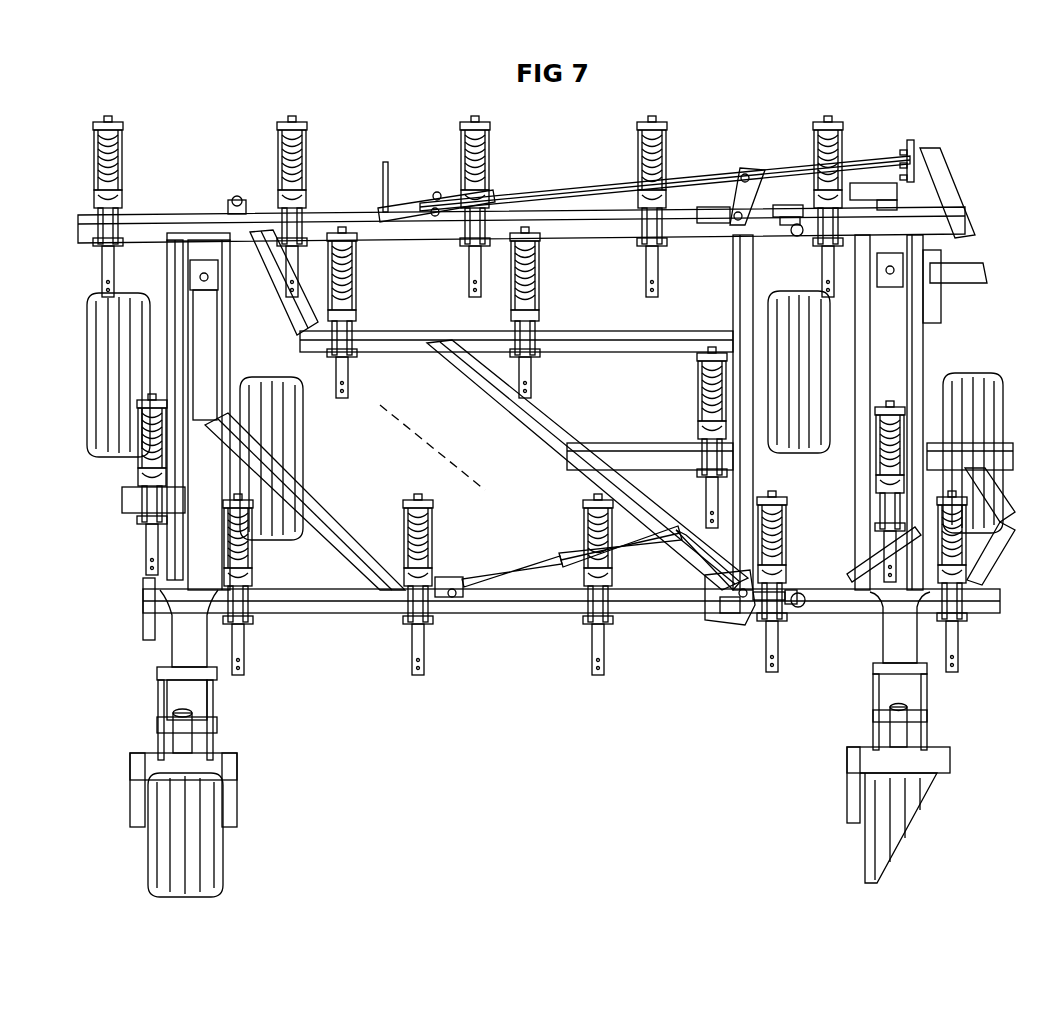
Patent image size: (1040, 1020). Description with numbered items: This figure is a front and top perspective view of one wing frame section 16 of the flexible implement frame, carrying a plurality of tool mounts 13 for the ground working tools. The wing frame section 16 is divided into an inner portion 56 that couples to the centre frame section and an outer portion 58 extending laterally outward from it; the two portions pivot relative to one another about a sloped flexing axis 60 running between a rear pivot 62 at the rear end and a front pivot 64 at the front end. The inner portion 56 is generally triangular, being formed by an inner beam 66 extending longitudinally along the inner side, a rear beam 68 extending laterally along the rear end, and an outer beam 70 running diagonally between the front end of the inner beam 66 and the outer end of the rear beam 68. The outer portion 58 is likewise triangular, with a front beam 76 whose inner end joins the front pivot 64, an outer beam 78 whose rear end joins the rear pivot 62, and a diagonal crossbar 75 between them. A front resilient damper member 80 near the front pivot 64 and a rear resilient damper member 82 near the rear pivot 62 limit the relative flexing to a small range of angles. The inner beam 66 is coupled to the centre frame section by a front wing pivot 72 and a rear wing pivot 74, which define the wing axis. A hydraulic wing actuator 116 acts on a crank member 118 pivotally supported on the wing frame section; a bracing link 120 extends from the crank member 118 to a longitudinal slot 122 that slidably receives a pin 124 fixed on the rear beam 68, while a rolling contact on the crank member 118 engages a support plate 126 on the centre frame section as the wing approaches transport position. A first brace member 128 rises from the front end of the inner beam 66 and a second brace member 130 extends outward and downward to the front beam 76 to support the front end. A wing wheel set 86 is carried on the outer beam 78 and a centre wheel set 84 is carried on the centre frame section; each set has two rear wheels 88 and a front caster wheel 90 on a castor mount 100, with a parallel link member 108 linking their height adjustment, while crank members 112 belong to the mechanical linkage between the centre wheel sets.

The wing frame section 16 is at (231, 64).
The rear resilient damper member 82 is at (222, 208).
The longitudinal slot 122 is at (453, 200).
The pin 124 is at (437, 190).
The bracing link 120 is at (560, 188).
The crank member 118 is at (727, 165).
The rear wing pivot 74 is at (797, 210).
The support plate 126 is at (873, 183).
The hydraulic wing actuator 116 is at (920, 153).
The rear beam 68 is at (583, 232).
The rear pivot 62 is at (240, 252).
The inner beam 66 is at (740, 288).
The parallel link member 108 is at (222, 360).
The rear wheels 88 is at (100, 390).
The flexing axis 60 is at (400, 420).
The inner portion 56 is at (510, 430).
The outer portion 58 is at (352, 490).
The outer beam 70 is at (543, 433).
The crossbar 75 is at (333, 543).
The outer beam 78 is at (187, 530).
The first brace member 128 is at (790, 525).
The crank member 112 is at (170, 652).
The front beam 76 is at (310, 608).
The second brace member 130 is at (536, 570).
The tool mount 13 is at (426, 662).
The front pivot 64 is at (713, 623).
The front resilient damper member 80 is at (715, 570).
The front wing pivot 72 is at (803, 607).
The castor mount 100 is at (187, 738).
The front wheel 90 is at (197, 877).
The wing wheel set 86 is at (252, 847).
The centre wheel set 84 is at (852, 830).